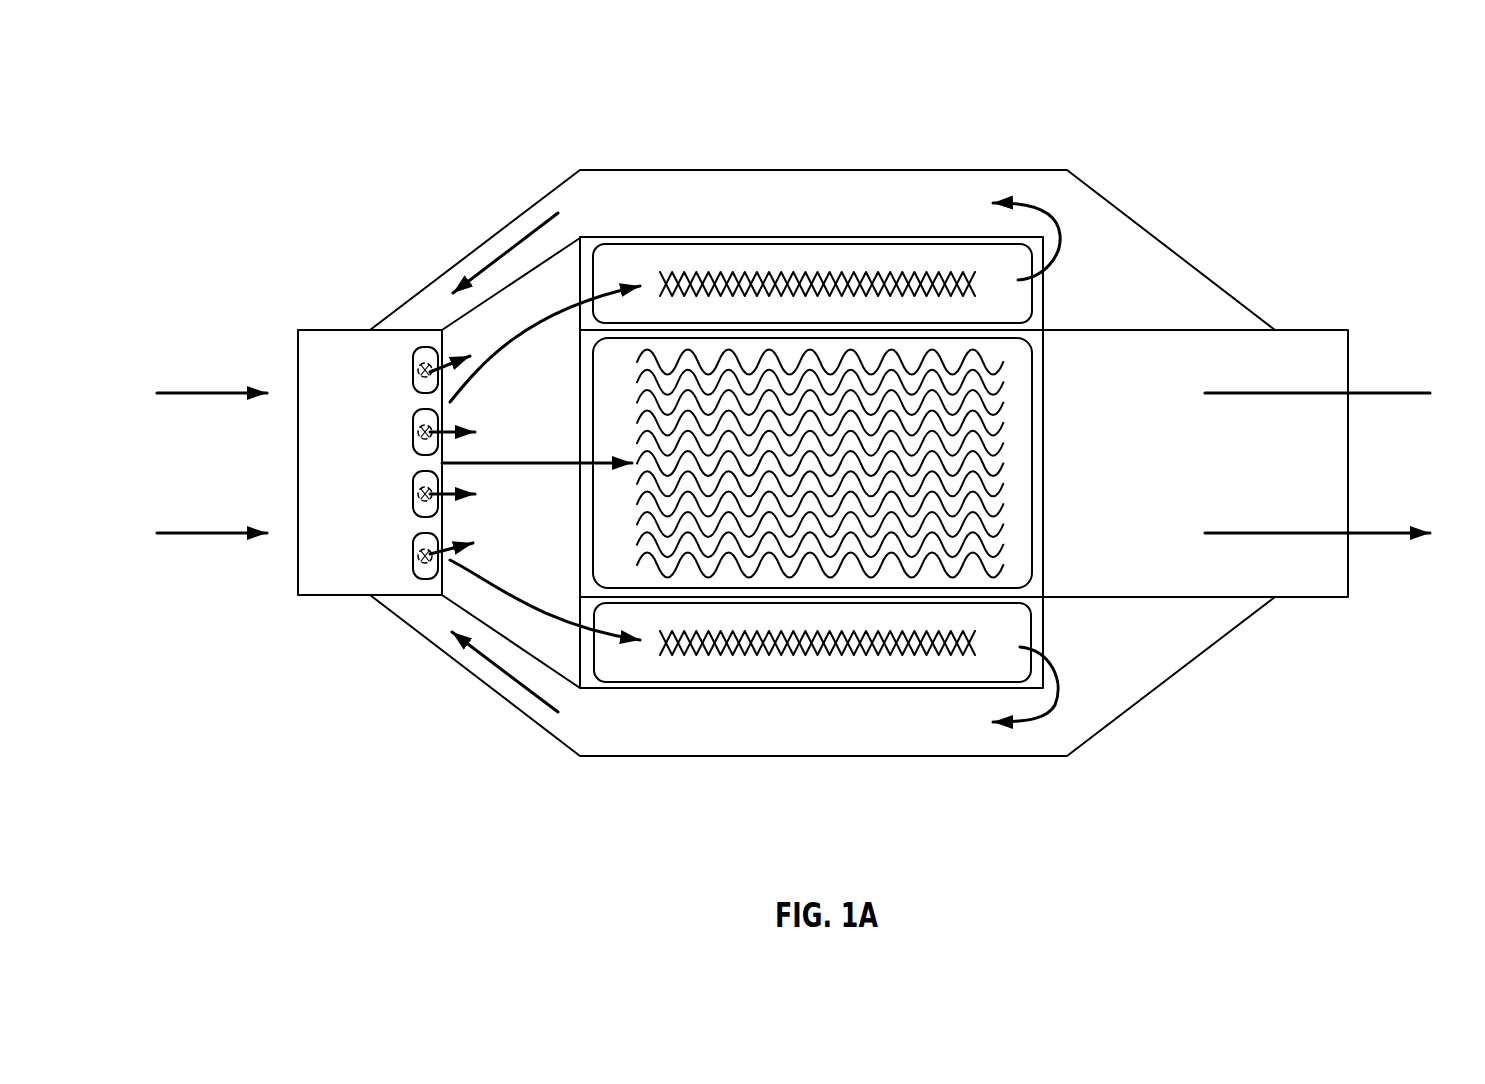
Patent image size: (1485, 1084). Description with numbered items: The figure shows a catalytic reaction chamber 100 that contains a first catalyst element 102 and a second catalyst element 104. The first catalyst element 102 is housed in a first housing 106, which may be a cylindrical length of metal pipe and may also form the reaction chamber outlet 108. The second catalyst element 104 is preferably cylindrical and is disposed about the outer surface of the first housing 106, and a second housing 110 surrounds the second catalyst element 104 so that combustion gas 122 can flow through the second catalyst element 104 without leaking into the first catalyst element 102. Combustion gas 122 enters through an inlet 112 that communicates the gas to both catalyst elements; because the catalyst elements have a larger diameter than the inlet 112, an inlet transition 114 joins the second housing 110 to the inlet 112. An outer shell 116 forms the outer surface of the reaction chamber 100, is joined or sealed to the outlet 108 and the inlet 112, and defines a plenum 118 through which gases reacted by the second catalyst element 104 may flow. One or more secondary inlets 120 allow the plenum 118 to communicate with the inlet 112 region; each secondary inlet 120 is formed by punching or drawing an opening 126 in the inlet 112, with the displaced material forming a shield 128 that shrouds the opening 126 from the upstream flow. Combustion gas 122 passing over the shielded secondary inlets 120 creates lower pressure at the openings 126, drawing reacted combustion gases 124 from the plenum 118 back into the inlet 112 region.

The reaction chamber 100 is at (1347, 103).
The first catalyst element 102 is at (957, 415).
The second catalyst element 104 is at (853, 275).
The first housing 106 is at (1032, 593).
The reaction chamber outlet 108 is at (1307, 330).
The second housing 110 is at (793, 237).
The inlet 112 is at (303, 330).
The inlet transition 114 is at (517, 280).
The outer shell 116 is at (707, 170).
The plenum 118 is at (977, 197).
The secondary inlet 120 is at (413, 370).
The combustion gas 122 is at (205, 392).
The reacted combustion gases 124 is at (545, 220).
The opening 126 is at (423, 355).
The shield 128 is at (423, 432).